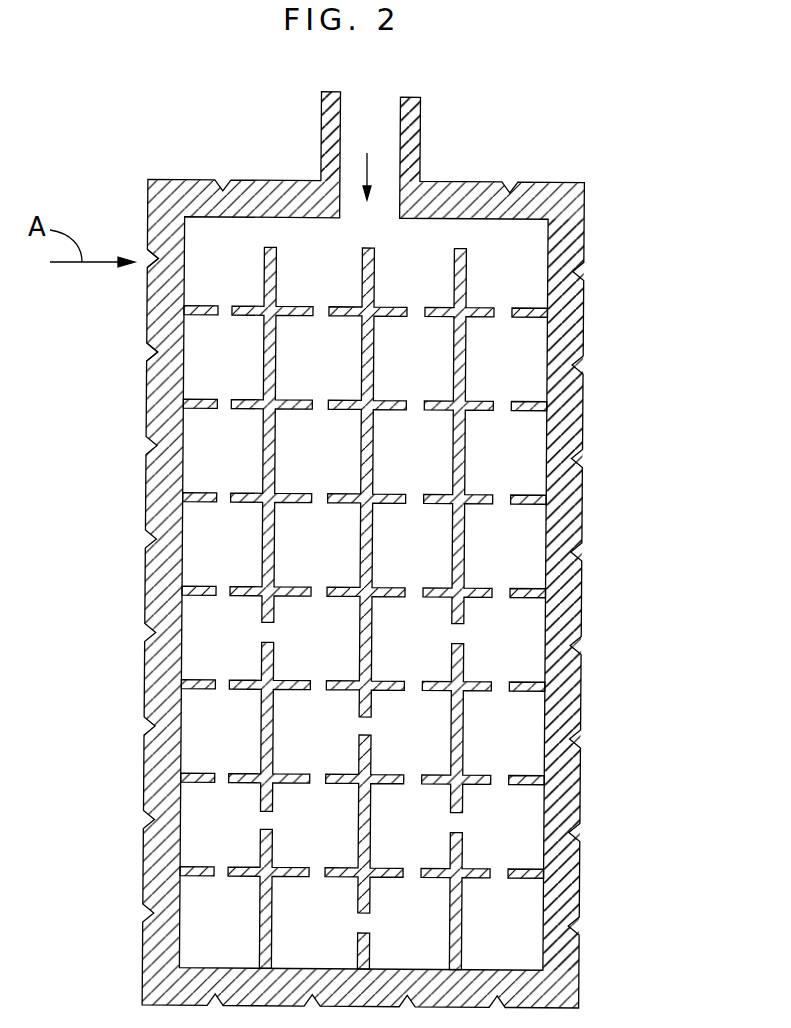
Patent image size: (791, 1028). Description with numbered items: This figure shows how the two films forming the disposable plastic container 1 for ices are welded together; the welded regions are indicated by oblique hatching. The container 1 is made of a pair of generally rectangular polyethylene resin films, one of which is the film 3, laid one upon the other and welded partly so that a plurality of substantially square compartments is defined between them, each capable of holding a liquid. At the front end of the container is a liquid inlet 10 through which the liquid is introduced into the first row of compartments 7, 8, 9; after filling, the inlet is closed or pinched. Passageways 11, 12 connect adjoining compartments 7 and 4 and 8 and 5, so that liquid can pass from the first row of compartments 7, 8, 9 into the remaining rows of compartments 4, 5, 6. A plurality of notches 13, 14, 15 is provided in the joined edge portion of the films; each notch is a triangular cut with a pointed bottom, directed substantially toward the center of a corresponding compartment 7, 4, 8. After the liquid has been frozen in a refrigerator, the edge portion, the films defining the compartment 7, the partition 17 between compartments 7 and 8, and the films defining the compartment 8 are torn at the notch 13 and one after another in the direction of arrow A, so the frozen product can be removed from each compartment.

The disposable plastic container 1 is at (598, 202).
The polyethylene resin film 3 is at (580, 241).
The compartment 4 is at (220, 365).
The compartment 5 is at (327, 353).
The compartment 6 is at (425, 370).
The compartment 7 is at (213, 253).
The compartment 8 is at (320, 268).
The compartment 9 is at (427, 270).
The liquid inlet 10 is at (382, 113).
The passageway 11 is at (227, 308).
The passageway 12 is at (320, 338).
The notch 13 is at (152, 266).
The notch 14 is at (152, 352).
The notch 15 is at (313, 184).
The partition 17 is at (267, 268).